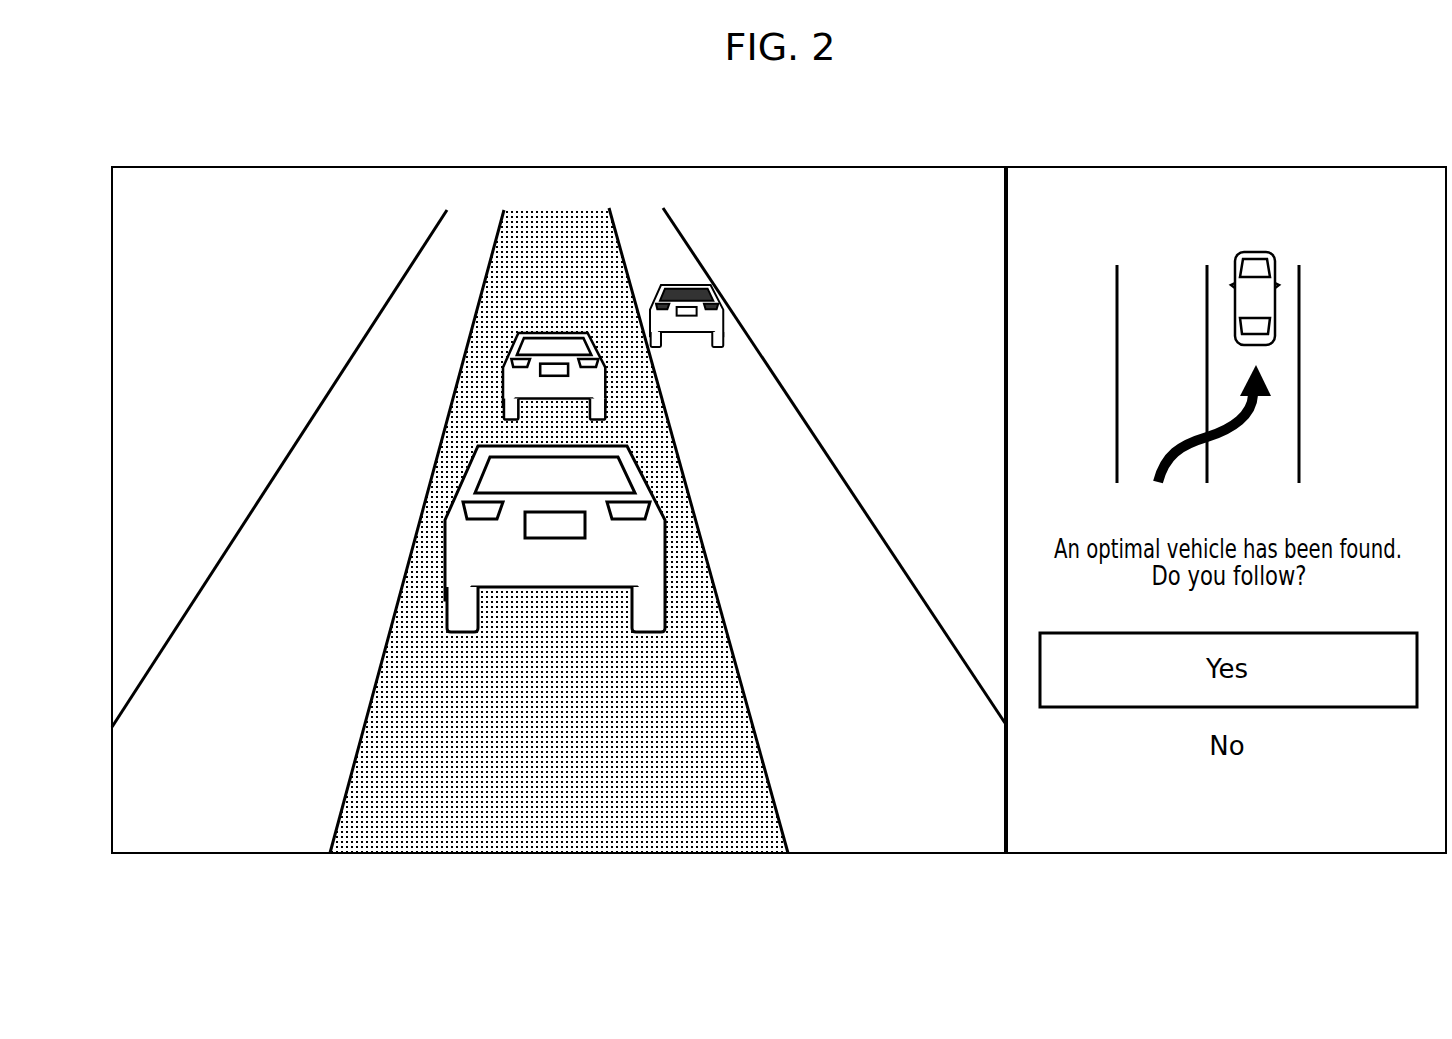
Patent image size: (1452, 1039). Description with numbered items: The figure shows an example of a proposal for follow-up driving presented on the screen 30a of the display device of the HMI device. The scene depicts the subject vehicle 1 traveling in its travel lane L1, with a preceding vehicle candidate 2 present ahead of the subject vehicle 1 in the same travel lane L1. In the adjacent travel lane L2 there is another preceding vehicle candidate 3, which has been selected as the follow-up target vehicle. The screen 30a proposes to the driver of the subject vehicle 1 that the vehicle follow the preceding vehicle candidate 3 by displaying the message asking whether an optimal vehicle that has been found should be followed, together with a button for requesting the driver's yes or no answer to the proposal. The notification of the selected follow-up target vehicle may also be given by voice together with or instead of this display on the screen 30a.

The screen 30a is at (1332, 167).
The subject vehicle 1 is at (640, 470).
The preceding vehicle candidate 2 is at (607, 372).
The preceding vehicle candidate 3 is at (690, 284).
The travel lane L1 is at (652, 810).
The travel lane L2 is at (853, 808).